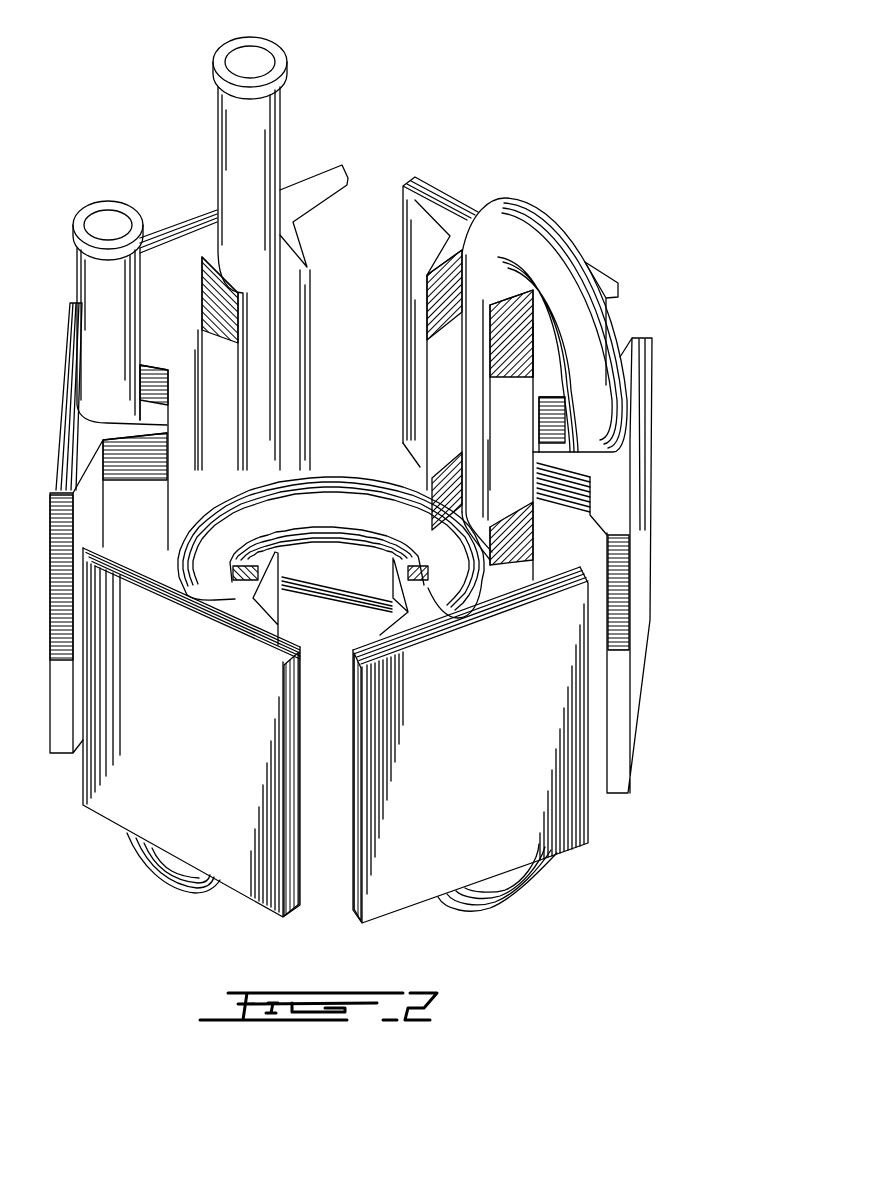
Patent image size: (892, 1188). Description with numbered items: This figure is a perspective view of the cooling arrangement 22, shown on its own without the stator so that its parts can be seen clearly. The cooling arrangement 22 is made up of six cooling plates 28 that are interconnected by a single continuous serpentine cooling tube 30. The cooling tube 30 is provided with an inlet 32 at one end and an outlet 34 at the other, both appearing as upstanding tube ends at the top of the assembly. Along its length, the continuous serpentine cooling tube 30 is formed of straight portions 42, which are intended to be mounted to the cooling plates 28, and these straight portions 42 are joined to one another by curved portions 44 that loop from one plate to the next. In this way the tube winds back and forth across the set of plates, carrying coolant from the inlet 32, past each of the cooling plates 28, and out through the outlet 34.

The cooling arrangement 22 is at (545, 163).
The cooling plates 28 is at (636, 356).
The continuous serpentine cooling tube 30 is at (547, 258).
The inlet 32 is at (276, 52).
The outlet 34 is at (108, 196).
The straight portions 42 is at (257, 293).
The curved portions 44 is at (360, 510).